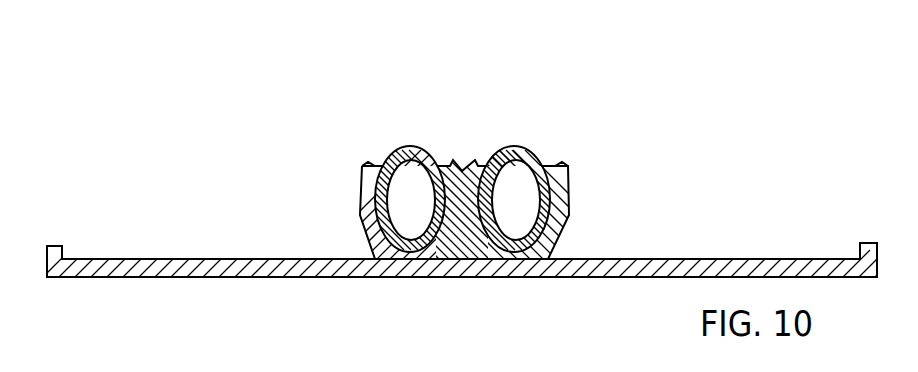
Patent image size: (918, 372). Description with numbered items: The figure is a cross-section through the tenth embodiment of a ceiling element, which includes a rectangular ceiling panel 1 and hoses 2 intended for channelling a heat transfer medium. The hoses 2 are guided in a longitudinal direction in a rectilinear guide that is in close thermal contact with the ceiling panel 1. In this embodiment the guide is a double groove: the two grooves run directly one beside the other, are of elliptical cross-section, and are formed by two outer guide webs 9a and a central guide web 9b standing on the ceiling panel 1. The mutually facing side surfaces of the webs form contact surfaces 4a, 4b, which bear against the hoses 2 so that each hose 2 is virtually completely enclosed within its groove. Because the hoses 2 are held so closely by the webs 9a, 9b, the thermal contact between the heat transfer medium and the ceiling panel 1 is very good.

The ceiling panel 1 is at (746, 258).
The hose 2 is at (409, 147).
The contact surface 4a is at (363, 199).
The contact surface 4b is at (422, 272).
The outer guide web 9a is at (366, 172).
The central guide web 9b is at (452, 212).